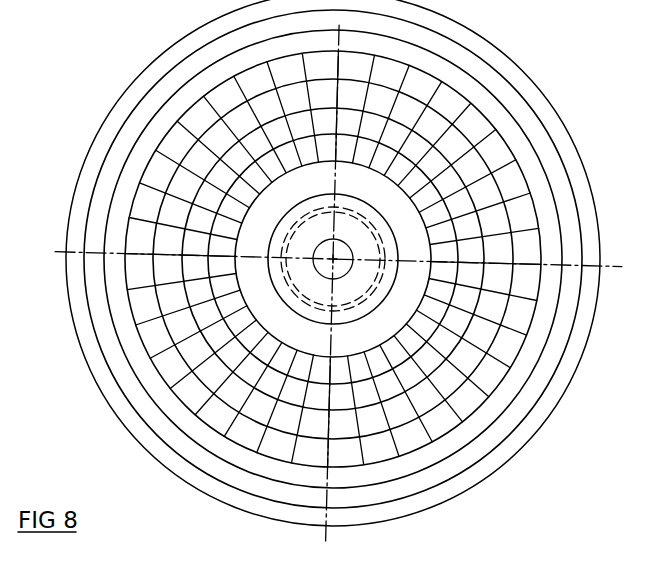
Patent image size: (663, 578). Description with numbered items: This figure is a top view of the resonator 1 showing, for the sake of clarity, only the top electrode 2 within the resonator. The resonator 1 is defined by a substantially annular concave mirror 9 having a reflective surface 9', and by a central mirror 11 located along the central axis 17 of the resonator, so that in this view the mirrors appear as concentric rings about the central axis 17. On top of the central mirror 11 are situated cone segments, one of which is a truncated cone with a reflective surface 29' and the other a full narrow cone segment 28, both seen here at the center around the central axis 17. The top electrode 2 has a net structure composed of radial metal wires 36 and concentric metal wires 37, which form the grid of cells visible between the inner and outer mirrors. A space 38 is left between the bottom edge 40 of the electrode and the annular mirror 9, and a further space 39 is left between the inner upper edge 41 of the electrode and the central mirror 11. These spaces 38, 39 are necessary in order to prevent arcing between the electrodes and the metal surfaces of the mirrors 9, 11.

The resonator 1 is at (108, 92).
The top electrode 2 is at (472, 107).
The annular concave mirror 9 is at (333, 263).
The reflective surface 9' is at (333, 259).
The central mirror 11 is at (312, 242).
The central axis 17 is at (336, 258).
The cone segment 28 is at (341, 251).
The reflective surface 29' is at (333, 240).
The radial metal wires 36 is at (178, 378).
The concentric metal wires 37 is at (182, 363).
The space 38 is at (510, 142).
The space 39 is at (412, 287).
The bottom edge 40 is at (480, 415).
The inner upper edge 41 is at (287, 353).